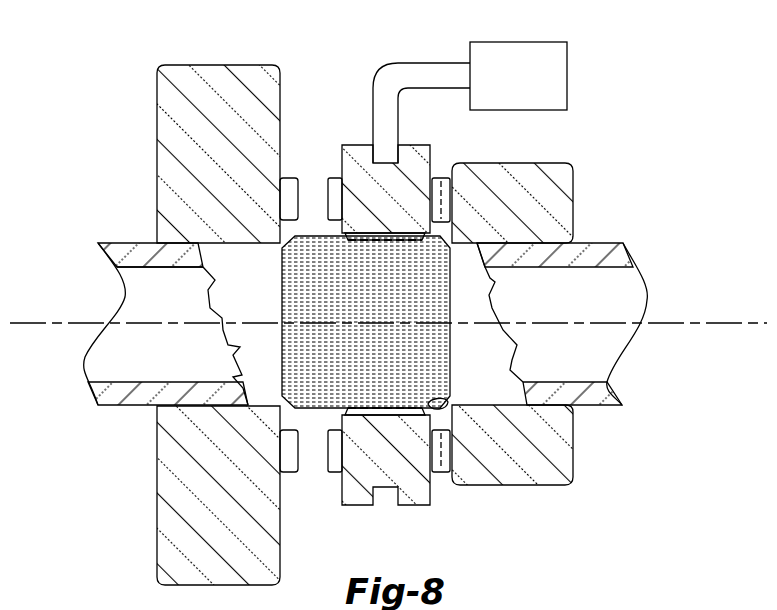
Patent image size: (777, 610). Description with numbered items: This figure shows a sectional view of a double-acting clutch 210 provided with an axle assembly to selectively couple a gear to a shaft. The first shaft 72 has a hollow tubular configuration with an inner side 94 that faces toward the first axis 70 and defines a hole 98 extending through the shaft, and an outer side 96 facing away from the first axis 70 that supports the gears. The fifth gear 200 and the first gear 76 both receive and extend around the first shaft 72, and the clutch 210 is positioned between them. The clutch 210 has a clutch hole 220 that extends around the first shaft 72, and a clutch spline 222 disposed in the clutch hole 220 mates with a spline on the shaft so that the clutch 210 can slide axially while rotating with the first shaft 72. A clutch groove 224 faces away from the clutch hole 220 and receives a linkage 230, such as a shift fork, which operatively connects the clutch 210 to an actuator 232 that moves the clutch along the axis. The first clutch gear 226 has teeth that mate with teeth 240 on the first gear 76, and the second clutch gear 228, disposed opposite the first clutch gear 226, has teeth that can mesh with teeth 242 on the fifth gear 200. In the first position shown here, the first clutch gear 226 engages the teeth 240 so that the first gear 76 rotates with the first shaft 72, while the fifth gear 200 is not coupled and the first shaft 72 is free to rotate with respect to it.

The first axis 70 is at (677, 305).
The first shaft 72 is at (128, 405).
The first gear 76 is at (570, 163).
The inner side 94 is at (145, 268).
The outer side 96 is at (135, 243).
The hole 98 is at (145, 303).
The fifth gear 200 is at (211, 65).
The clutch 210 is at (357, 145).
The clutch hole 220 is at (445, 404).
The clutch spline 222 is at (417, 405).
The clutch groove 224 is at (377, 490).
The first clutch gear 226 is at (434, 473).
The second clutch gear 228 is at (333, 472).
The linkage 230 is at (412, 63).
The actuator 232 is at (502, 86).
The teeth 240 is at (440, 180).
The teeth 242 is at (284, 179).